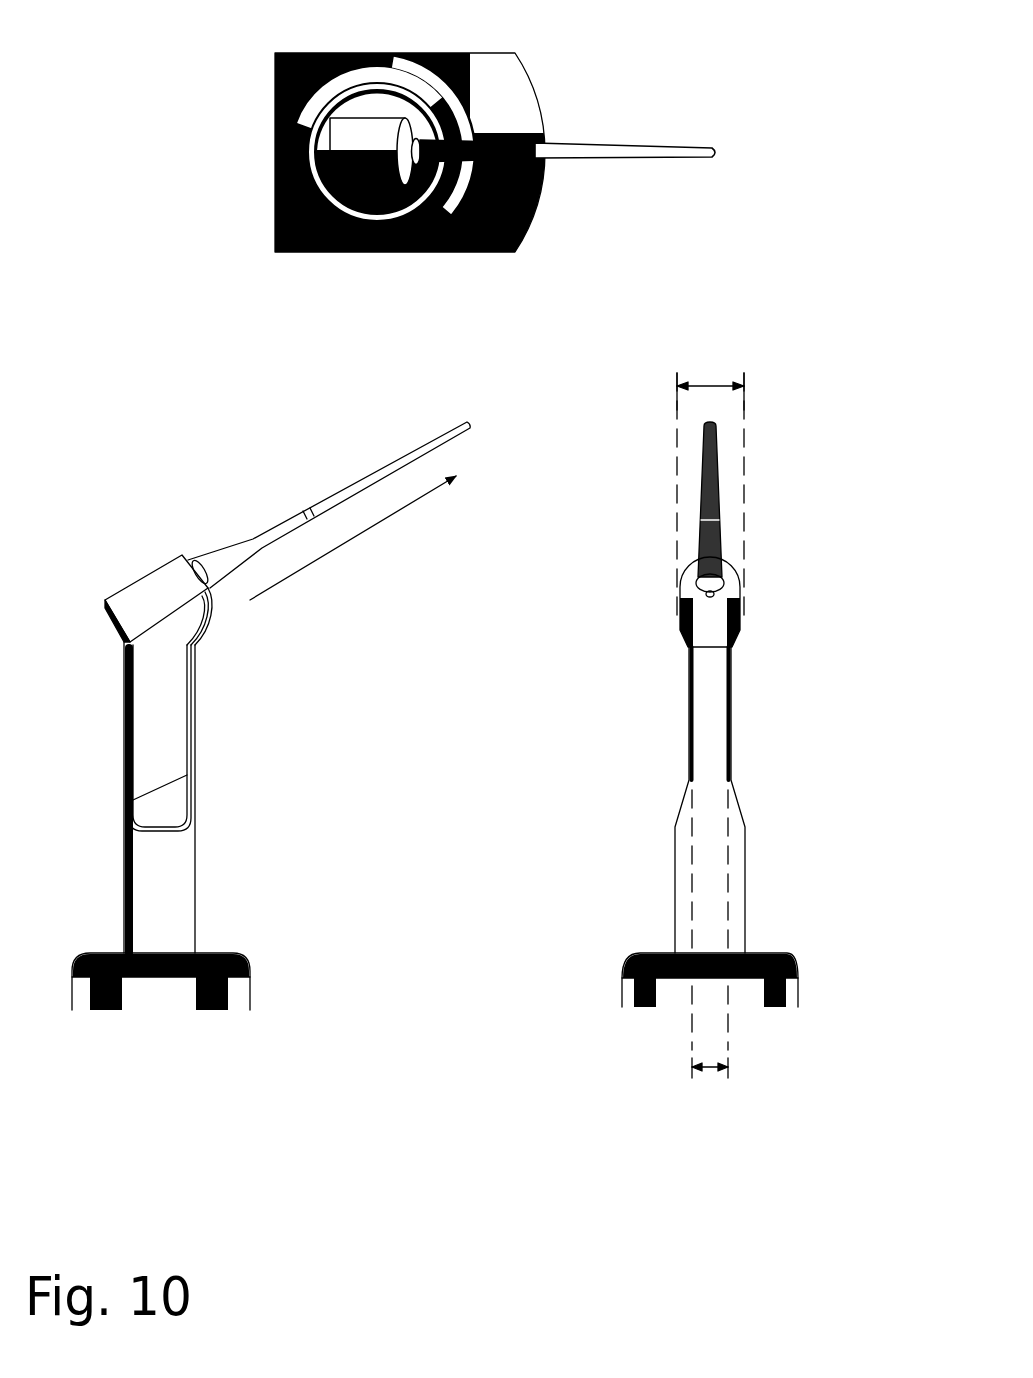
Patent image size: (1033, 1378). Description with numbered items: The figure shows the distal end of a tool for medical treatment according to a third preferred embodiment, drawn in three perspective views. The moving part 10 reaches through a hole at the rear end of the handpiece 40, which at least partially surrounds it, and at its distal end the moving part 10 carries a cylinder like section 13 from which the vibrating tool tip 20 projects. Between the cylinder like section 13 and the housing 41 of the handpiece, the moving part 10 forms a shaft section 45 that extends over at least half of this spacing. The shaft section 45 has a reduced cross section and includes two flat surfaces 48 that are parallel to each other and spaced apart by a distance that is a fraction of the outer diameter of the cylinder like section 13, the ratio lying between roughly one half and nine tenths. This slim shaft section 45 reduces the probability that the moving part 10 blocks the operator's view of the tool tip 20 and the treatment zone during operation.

The moving part 10 is at (180, 893).
The cylinder like section 13 is at (141, 556).
The tool tip 20 is at (612, 150).
The handpiece 40 is at (520, 88).
The housing 41 is at (232, 990).
The shaft section 45 is at (450, 729).
The flat surfaces 48 is at (173, 713).